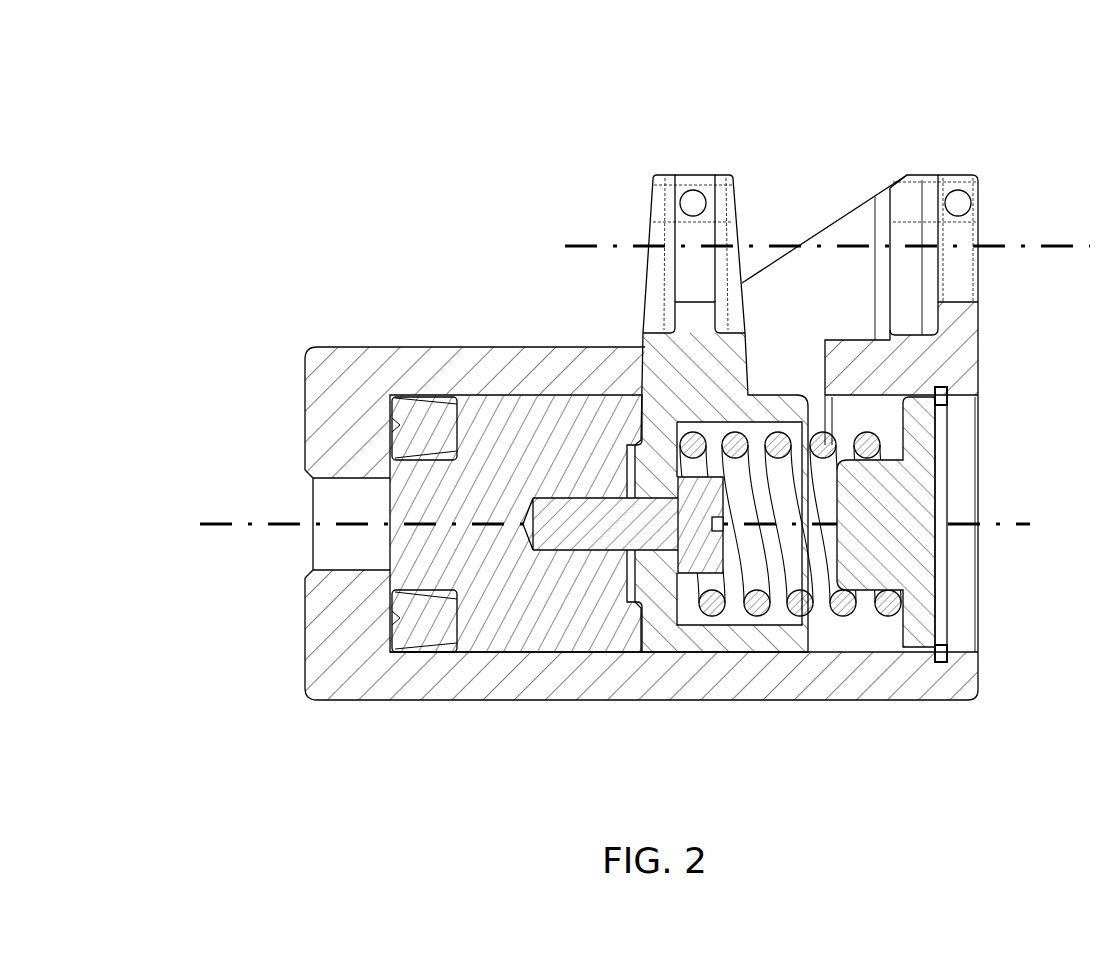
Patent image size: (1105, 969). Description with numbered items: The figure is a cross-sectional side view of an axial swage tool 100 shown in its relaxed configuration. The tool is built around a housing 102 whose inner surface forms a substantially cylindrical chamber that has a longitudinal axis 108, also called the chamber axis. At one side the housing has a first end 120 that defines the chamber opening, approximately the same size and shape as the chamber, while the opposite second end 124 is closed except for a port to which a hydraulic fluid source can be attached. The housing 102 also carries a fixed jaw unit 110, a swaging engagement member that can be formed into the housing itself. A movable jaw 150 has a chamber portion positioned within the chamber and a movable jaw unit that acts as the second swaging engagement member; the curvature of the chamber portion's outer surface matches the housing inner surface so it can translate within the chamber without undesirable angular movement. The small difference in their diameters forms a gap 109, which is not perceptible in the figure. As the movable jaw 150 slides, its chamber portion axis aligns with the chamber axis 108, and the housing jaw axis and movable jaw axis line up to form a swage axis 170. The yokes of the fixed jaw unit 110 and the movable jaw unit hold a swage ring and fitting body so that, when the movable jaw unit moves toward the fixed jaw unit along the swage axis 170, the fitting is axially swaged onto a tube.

The axial swage tool 100 is at (950, 70).
The housing 102 is at (322, 358).
The longitudinal axis 108 is at (205, 525).
The gap 109 is at (513, 393).
The fixed jaw unit 110 is at (948, 175).
The first end 120 is at (980, 472).
The second end 124 is at (305, 638).
The movable jaw 150 is at (670, 185).
The swage axis 170 is at (583, 245).